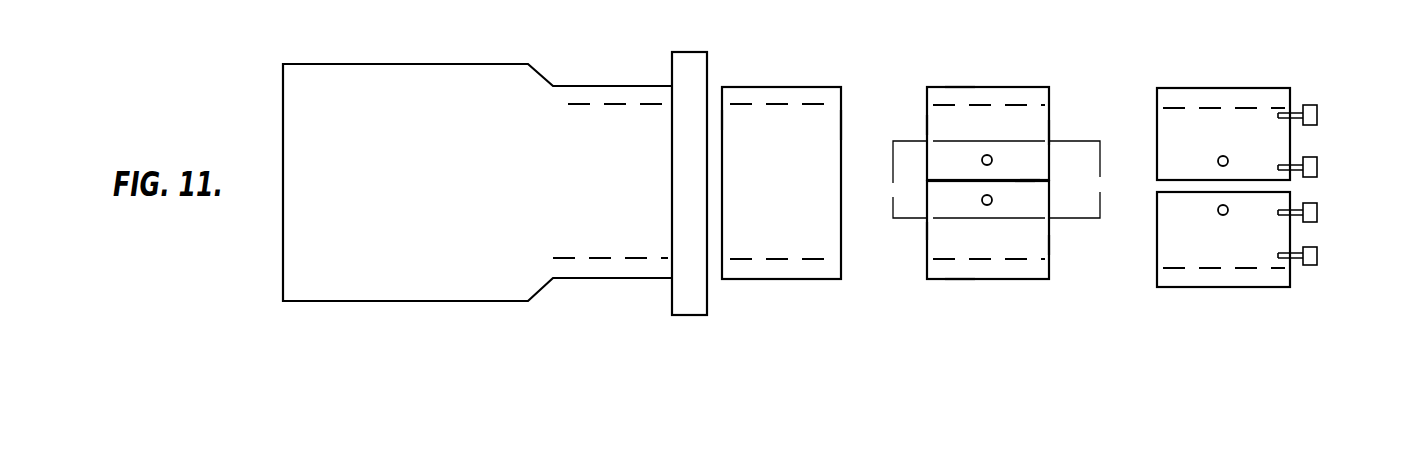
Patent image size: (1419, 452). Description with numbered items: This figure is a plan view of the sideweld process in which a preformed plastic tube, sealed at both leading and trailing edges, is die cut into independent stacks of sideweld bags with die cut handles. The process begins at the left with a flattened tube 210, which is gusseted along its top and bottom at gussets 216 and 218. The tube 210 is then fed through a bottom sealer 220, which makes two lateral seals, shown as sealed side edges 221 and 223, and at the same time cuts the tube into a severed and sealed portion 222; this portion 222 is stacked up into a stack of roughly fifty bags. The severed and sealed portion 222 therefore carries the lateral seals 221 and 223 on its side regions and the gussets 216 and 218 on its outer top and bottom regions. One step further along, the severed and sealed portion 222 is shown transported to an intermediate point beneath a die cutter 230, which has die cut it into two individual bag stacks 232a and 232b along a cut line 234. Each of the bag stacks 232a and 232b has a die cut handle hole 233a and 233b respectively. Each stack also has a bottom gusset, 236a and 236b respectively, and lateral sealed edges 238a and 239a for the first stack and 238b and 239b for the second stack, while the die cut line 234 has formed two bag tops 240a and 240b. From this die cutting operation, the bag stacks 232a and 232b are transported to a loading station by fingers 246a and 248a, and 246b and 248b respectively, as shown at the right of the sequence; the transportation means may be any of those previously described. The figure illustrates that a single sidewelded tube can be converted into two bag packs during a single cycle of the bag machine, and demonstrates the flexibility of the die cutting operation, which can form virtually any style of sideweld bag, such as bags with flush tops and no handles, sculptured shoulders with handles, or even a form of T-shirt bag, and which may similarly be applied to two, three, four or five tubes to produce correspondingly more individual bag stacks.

The flattened tube 210 is at (392, 85).
The gusset 216 is at (593, 93).
The gusset 218 is at (602, 283).
The bottom sealer 220 is at (685, 53).
The sealed side edge 221 is at (722, 121).
The severed and sealed portion 222 is at (766, 82).
The sealed side edge 223 is at (841, 124).
The die cutter 230 is at (893, 198).
The bag stack 232a is at (1027, 132).
The bag stack 232b is at (937, 241).
The die cut handle hole 233a is at (990, 155).
The die cut handle hole 233b is at (988, 207).
The cut line 234 is at (952, 178).
The bottom gusset 236a is at (958, 89).
The bottom gusset 236b is at (957, 276).
The lateral sealed edge 238a is at (925, 126).
The lateral sealed edge 238b is at (925, 229).
The lateral sealed edge 239a is at (1049, 131).
The lateral sealed edge 239b is at (1049, 245).
The bag top 240a is at (1028, 173).
The bag top 240b is at (1025, 205).
The finger 246a is at (1317, 113).
The finger 248a is at (1317, 166).
The finger 246b is at (1317, 212).
The finger 248b is at (1317, 255).